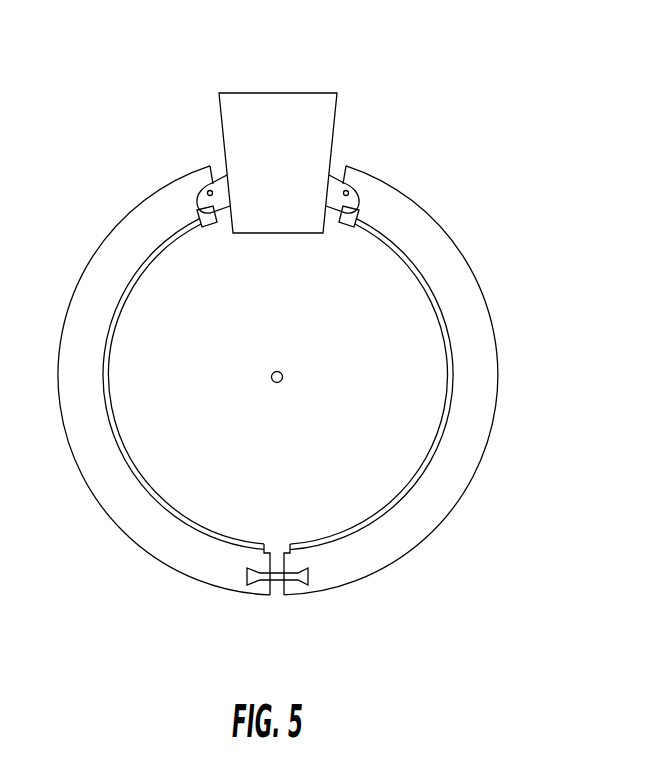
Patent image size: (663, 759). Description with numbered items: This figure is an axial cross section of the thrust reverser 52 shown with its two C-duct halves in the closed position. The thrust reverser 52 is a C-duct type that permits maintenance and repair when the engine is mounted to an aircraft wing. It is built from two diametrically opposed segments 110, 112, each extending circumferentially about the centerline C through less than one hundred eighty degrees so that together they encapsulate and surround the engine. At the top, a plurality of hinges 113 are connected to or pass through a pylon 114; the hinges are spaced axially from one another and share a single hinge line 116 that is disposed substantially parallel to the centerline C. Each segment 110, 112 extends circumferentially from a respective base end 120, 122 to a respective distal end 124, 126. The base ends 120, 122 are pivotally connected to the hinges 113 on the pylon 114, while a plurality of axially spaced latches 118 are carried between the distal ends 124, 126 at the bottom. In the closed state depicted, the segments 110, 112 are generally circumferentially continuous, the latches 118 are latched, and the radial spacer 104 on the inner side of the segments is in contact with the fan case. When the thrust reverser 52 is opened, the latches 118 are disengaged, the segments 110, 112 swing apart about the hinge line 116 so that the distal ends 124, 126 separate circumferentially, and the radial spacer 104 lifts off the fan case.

The thrust reverser 52 is at (548, 210).
The radial spacer 104 is at (105, 392).
The segment 110 is at (71, 300).
The segment 112 is at (495, 337).
The hinge 113 is at (200, 226).
The pylon 114 is at (284, 93).
The hinge line 116 is at (197, 181).
The latch 118 is at (278, 586).
The base end 120 is at (205, 164).
The base end 122 is at (352, 168).
The distal end 124 is at (238, 592).
The distal end 126 is at (322, 592).
The centerline C is at (283, 373).